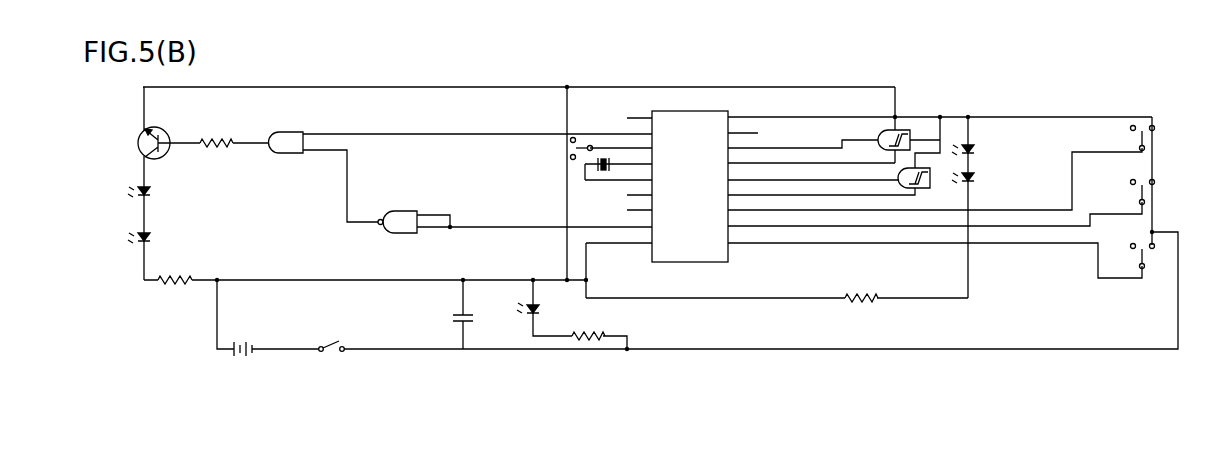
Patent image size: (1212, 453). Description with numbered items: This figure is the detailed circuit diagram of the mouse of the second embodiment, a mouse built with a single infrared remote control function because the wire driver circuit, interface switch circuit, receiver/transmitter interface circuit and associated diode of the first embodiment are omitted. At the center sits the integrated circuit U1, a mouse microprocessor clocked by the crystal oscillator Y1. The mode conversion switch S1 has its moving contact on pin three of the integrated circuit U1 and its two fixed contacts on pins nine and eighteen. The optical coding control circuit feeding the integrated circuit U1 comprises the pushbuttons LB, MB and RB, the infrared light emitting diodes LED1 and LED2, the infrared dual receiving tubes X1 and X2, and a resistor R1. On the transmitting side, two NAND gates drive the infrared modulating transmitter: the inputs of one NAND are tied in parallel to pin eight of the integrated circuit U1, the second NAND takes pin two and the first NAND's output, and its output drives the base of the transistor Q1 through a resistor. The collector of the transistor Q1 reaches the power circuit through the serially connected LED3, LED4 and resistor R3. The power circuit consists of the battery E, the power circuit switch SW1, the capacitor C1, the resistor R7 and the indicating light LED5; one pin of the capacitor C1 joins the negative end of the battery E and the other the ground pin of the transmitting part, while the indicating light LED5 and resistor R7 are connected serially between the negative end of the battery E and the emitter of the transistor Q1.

The transistor Q1 is at (169, 137).
The LED LED3 is at (160, 193).
The LED LED4 is at (160, 239).
The resistor R3 is at (175, 292).
The battery E is at (242, 338).
The power circuit switch SW1 is at (324, 335).
The capacitor C1 is at (450, 314).
The indicating light LED5 is at (545, 308).
The resistor R7 is at (599, 330).
The mode conversion switch S1 is at (570, 149).
The crystal oscillator Y1 is at (618, 180).
The integrated circuit U1 is at (690, 186).
The infrared dual receiving tube X2 is at (906, 134).
The infrared dual receiving tube X1 is at (921, 187).
The infrared light emitting diode LED1 is at (988, 151).
The infrared light emitting diode LED2 is at (988, 182).
The pushbutton LB is at (1155, 138).
The pushbutton MB is at (1155, 192).
The pushbutton RB is at (1150, 259).
The resistor R1 is at (861, 290).